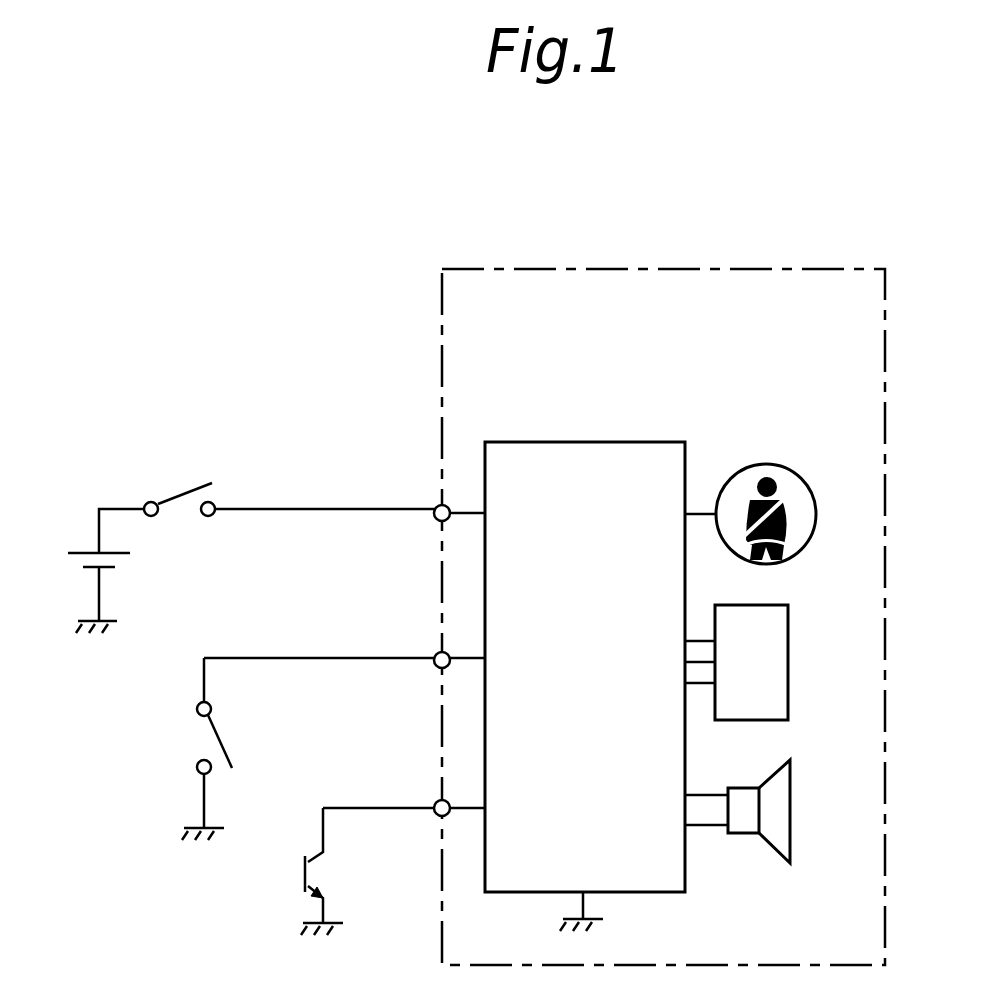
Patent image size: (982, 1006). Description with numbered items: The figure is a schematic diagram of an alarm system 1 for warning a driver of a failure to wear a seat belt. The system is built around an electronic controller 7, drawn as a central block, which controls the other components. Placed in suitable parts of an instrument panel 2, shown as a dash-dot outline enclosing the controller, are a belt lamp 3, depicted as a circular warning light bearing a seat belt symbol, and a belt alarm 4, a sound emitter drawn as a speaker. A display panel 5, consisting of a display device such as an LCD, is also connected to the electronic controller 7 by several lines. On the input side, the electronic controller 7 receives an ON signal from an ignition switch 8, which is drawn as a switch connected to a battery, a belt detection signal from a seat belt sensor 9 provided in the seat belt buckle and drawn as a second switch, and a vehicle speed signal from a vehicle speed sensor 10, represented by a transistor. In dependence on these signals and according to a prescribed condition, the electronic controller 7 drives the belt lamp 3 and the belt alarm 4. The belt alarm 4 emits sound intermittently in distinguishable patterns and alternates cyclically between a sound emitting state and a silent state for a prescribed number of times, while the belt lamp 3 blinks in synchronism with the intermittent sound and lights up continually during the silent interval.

The alarm system 1 is at (337, 322).
The instrument panel 2 is at (787, 269).
The belt lamp 3 is at (783, 465).
The belt alarm 4 is at (790, 815).
The display panel 5 is at (788, 670).
The electronic controller 7 is at (655, 892).
The ignition switch 8 is at (183, 512).
The seat belt sensor 9 is at (202, 737).
The vehicle speed sensor 10 is at (320, 875).